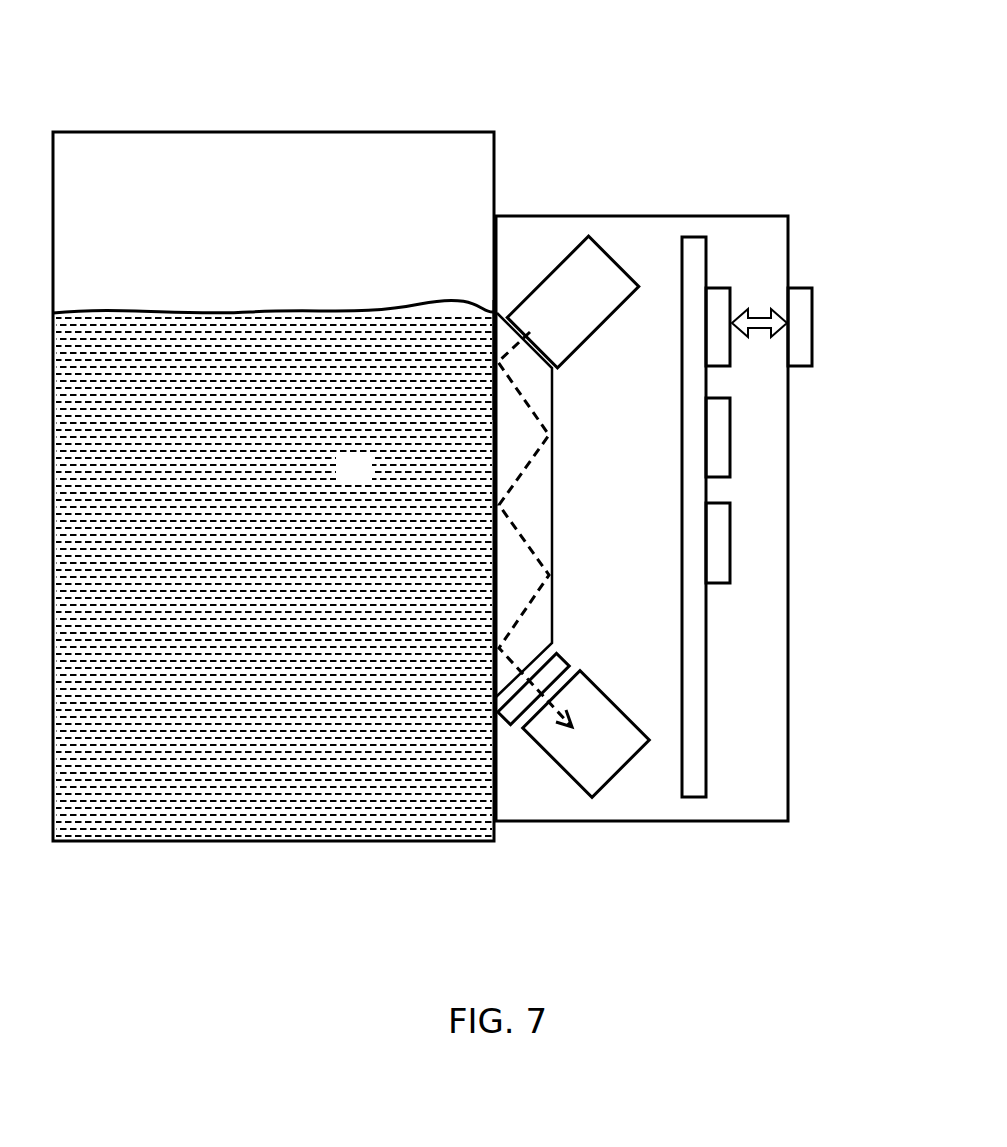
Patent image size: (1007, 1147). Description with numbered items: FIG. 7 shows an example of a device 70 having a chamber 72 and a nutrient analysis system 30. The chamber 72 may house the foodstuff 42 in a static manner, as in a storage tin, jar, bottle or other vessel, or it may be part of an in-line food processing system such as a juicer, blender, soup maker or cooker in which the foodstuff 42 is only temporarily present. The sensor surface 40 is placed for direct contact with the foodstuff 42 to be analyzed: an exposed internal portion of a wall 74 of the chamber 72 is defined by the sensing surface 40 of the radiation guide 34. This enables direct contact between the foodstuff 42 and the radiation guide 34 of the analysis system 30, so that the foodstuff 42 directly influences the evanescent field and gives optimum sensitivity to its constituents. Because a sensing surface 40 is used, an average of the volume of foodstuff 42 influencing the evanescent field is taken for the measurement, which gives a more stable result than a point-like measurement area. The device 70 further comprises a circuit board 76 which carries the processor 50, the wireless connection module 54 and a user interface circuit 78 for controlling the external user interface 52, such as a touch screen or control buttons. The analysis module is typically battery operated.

The device 70 is at (585, 95).
The nutrient analysis system 30 is at (742, 193).
The chamber 72 is at (245, 131).
The wall 74 is at (495, 183).
The sensor surface 40 is at (495, 400).
The foodstuff 42 is at (368, 476).
The radiation guide 34 is at (552, 523).
The circuit board 76 is at (707, 720).
The user interface circuit 78 is at (731, 304).
The external user interface 52 is at (812, 346).
The processor 50 is at (731, 440).
The wireless connection module 54 is at (731, 538).